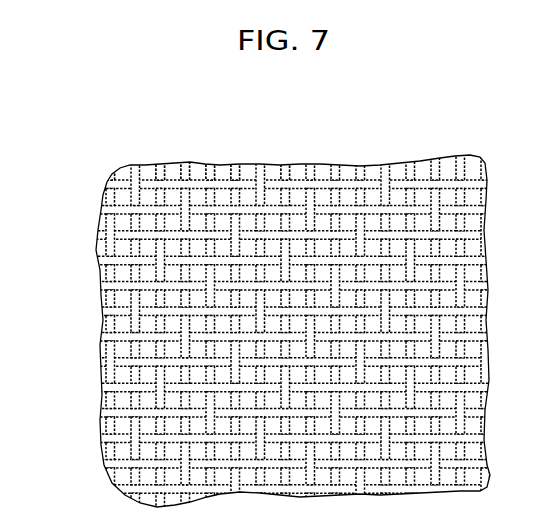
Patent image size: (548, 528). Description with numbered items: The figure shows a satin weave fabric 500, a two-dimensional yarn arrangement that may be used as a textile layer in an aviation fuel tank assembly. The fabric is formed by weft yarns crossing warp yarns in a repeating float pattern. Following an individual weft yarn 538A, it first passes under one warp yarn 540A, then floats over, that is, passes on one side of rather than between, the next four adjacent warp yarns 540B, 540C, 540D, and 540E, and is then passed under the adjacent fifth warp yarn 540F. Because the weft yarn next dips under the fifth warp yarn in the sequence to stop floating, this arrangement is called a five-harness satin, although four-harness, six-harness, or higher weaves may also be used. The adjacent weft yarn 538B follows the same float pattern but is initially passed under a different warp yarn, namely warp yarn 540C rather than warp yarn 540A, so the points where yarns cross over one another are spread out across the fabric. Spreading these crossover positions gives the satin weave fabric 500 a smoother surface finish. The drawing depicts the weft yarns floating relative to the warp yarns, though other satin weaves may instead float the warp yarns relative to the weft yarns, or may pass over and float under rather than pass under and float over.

The satin weave fabric 500 is at (399, 120).
The weft yarn 538A is at (115, 185).
The weft yarn 538B is at (105, 208).
The warp yarn 540A is at (124, 173).
The warp yarn 540B is at (152, 165).
The warp yarn 540C is at (183, 167).
The warp yarn 540D is at (217, 163).
The warp yarn 540E is at (240, 165).
The warp yarn 540F is at (275, 165).